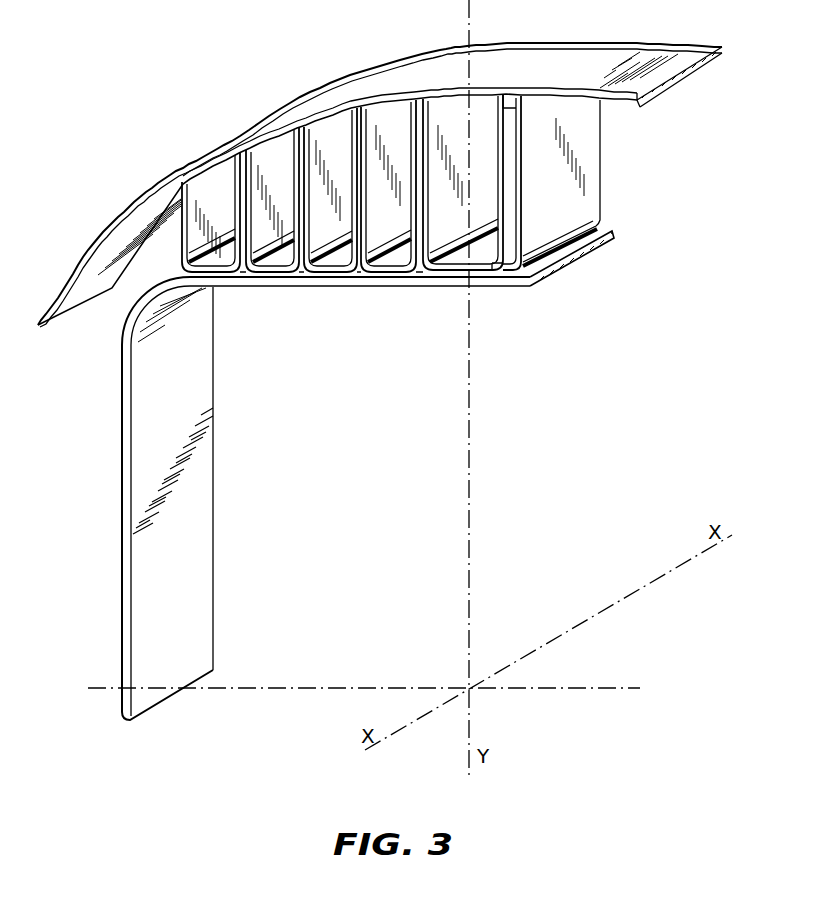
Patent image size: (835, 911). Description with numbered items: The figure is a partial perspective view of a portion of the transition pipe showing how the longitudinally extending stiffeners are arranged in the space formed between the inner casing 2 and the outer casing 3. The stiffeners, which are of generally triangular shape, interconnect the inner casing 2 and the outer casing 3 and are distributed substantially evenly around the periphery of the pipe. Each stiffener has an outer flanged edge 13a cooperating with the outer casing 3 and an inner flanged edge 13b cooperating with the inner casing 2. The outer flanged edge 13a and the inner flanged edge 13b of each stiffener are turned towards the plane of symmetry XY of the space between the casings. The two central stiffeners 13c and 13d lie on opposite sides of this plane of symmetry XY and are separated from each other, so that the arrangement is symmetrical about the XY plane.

The outer casing 3 is at (597, 47).
The inner casing 2 is at (268, 282).
The outer flanged edge 13a is at (425, 100).
The inner flanged edge 13b is at (378, 275).
The central stiffener 13c is at (440, 223).
The central stiffener 13d is at (585, 170).